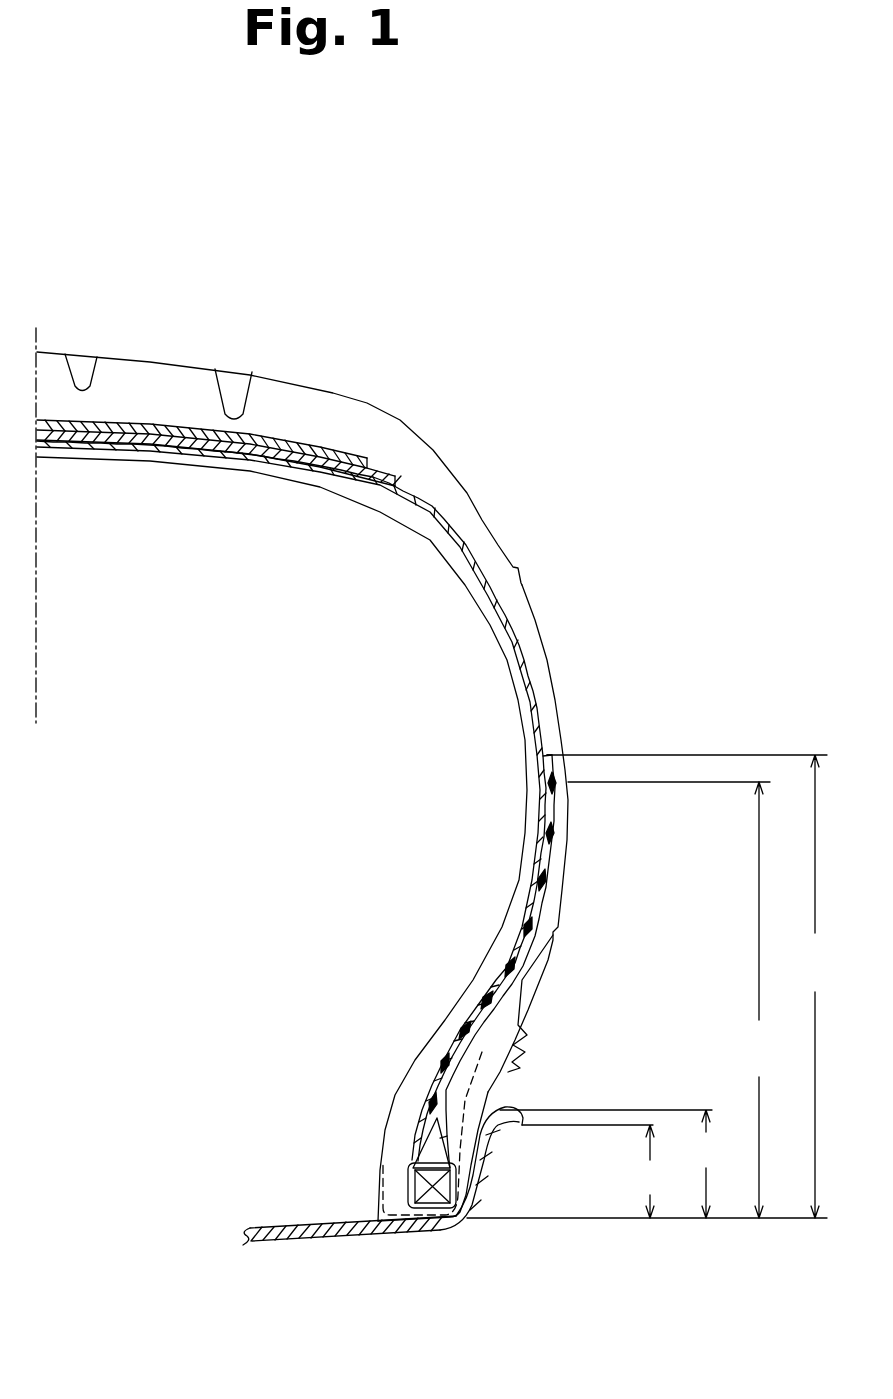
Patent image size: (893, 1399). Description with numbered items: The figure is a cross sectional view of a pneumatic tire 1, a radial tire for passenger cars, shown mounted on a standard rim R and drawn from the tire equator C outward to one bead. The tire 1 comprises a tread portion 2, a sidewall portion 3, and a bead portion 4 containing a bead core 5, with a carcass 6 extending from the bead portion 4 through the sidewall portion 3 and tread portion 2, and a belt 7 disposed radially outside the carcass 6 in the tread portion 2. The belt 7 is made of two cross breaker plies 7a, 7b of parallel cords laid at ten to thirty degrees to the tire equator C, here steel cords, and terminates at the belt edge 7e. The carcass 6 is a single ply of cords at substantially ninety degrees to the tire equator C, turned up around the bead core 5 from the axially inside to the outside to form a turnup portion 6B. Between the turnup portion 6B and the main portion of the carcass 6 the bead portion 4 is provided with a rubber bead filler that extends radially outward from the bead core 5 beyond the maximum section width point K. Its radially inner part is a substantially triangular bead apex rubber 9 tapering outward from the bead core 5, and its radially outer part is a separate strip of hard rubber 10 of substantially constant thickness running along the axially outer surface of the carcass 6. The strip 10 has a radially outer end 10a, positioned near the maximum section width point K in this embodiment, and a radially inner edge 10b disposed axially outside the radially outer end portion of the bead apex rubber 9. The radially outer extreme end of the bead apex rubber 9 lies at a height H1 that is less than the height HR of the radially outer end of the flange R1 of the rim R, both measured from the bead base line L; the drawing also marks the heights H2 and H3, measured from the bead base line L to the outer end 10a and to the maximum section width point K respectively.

The pneumatic tire 1 is at (518, 382).
The tread portion 2 is at (153, 373).
The sidewall portion 3 is at (595, 639).
The bead portion 4 is at (321, 1162).
The bead core 5 is at (429, 1214).
The carcass 6 is at (488, 597).
The turnup portion 6B is at (448, 1087).
The belt 7 is at (420, 285).
The breaker ply 7a is at (283, 457).
The breaker ply 7b is at (250, 433).
The belt edge 7e is at (410, 470).
The bead apex rubber 9 is at (426, 1148).
The strip of hard rubber 10 is at (537, 907).
The radially outer end 10a is at (555, 735).
The radially inner edge 10b is at (457, 1143).
The tire equator C is at (36, 655).
The maximum section width point K is at (586, 799).
The standard rim R is at (295, 1240).
The flange R1 is at (478, 1167).
The bead base line L is at (690, 1220).
The height of the bead apex outer end H1 is at (595, 1171).
The height of upper end from bead base line H2 is at (687, 986).
The height of maximum width point H3 is at (753, 1000).
The height of the rim flange outer end HR is at (613, 1164).